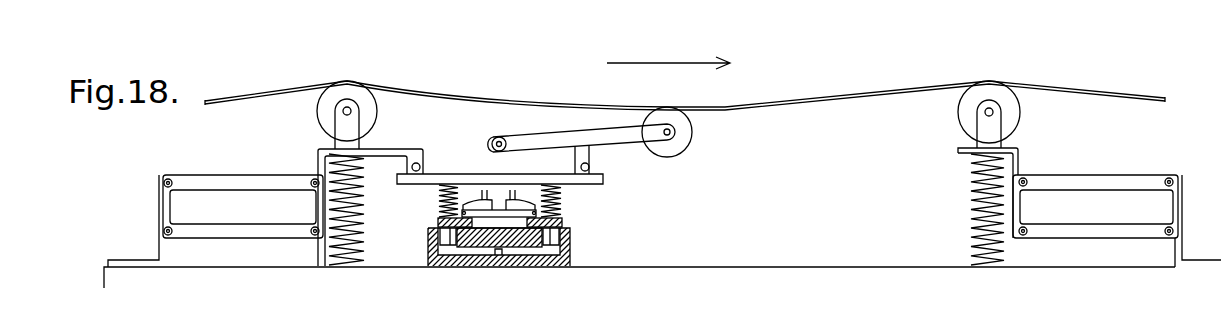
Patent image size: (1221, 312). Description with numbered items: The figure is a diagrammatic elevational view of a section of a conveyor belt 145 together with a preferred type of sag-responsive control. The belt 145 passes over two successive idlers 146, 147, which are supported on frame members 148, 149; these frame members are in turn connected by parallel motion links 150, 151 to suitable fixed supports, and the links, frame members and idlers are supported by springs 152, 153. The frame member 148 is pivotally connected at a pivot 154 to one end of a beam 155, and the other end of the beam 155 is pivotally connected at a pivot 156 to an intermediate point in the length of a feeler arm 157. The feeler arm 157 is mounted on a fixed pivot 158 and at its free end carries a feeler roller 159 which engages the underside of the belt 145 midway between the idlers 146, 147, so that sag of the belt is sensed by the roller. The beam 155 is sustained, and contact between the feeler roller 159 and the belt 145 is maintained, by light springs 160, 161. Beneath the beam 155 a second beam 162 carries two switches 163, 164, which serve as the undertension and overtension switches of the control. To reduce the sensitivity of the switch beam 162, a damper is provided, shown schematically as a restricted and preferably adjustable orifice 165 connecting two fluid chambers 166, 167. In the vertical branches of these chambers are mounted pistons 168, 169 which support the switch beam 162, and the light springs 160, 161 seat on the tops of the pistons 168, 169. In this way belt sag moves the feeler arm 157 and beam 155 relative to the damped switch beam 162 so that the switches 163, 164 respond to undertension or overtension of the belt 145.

The conveyor belt 145 is at (513, 101).
The idler 146 is at (372, 118).
The idler 147 is at (1013, 116).
The frame member 148 is at (396, 155).
The frame member 149 is at (1012, 148).
The parallel motion link 150 is at (222, 184).
The parallel motion link 151 is at (1114, 184).
The spring 152 is at (366, 218).
The spring 153 is at (970, 206).
The pivot 154 is at (411, 167).
The beam 155 is at (492, 173).
The pivot 156 is at (591, 167).
The feeler arm 157 is at (606, 133).
The fixed pivot 158 is at (503, 140).
The feeler roller 159 is at (695, 134).
The light spring 160 is at (440, 206).
The light spring 161 is at (563, 213).
The second beam 162 is at (482, 216).
The switch 163 is at (478, 202).
The switch 164 is at (530, 202).
The orifice 165 is at (496, 256).
The fluid chamber 166 is at (465, 250).
The fluid chamber 167 is at (547, 252).
The piston 168 is at (441, 240).
The piston 169 is at (561, 240).